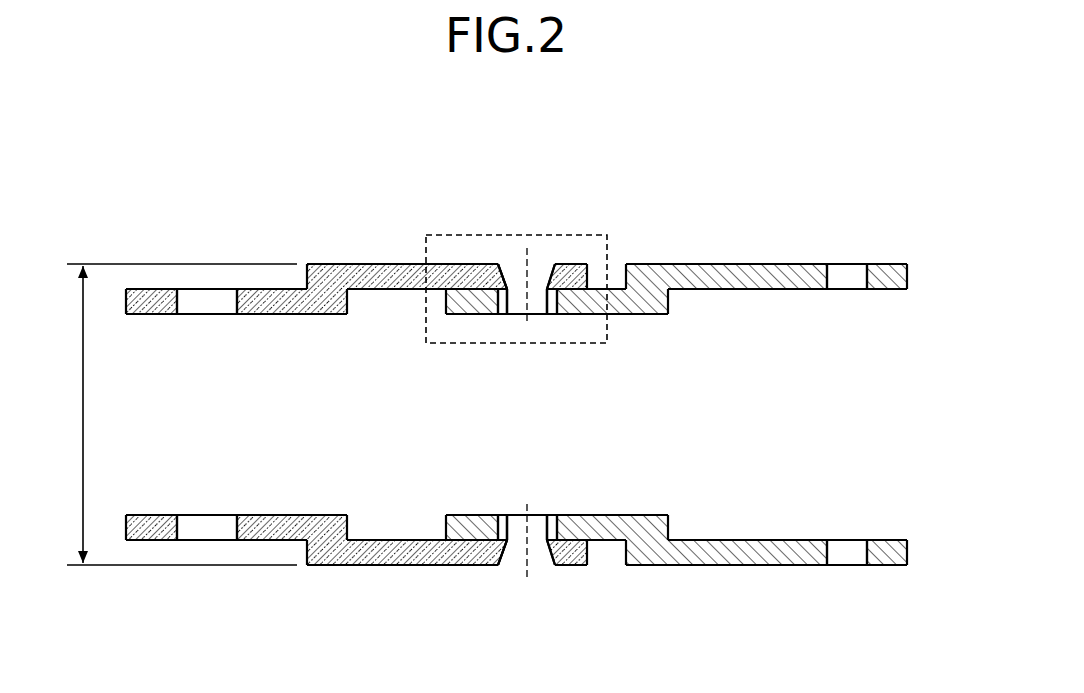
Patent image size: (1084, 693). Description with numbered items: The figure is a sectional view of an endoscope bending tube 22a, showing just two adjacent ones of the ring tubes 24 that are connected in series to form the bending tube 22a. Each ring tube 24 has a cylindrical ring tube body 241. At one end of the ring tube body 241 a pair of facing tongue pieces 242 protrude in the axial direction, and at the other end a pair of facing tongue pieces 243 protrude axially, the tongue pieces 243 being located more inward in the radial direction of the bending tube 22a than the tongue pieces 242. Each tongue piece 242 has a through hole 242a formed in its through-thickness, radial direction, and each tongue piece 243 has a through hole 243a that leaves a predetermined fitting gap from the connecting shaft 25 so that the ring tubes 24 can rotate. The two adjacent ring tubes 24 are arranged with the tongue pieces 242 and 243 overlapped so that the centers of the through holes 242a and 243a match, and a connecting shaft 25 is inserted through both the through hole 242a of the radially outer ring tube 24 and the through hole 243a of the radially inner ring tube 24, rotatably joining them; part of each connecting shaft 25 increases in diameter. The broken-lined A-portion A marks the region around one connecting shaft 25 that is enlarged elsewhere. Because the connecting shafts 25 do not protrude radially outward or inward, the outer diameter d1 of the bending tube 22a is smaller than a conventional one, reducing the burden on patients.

The bending tube 22a is at (124, 187).
The ring tube 24 is at (334, 243).
The ring tube body 241 is at (388, 290).
The tongue piece 242 is at (573, 263).
The through hole 242a is at (505, 272).
The tongue piece 243 is at (148, 315).
The through hole 243a is at (226, 305).
The connecting shaft 25 is at (540, 252).
The A-portion A is at (450, 234).
The outer diameter d1 is at (173, 414).